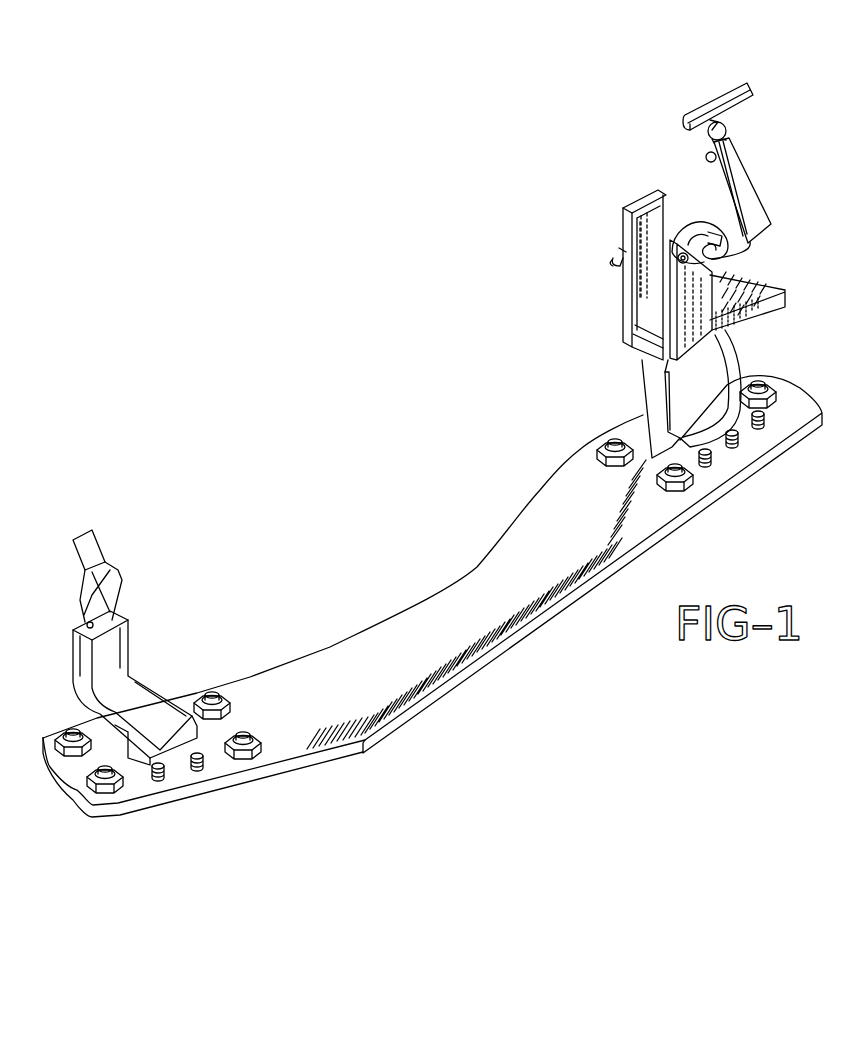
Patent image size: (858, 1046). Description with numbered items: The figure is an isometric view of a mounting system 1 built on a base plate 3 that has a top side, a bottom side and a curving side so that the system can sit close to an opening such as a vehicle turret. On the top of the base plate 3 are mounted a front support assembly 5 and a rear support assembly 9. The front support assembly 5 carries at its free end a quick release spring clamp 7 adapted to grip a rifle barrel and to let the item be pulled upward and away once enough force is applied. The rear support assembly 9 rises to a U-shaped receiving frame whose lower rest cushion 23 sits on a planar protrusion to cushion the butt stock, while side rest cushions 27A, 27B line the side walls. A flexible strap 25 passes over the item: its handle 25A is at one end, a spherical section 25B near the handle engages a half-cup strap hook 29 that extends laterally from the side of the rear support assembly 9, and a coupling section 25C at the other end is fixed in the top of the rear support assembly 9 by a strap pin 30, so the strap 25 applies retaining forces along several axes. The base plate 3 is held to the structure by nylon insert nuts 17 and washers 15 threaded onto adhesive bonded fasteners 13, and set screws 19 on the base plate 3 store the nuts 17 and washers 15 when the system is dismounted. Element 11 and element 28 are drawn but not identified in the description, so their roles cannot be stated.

The mounting system 1 is at (338, 460).
The base plate 3 is at (495, 555).
The front support assembly 5 is at (152, 686).
The spring clamp 7 is at (102, 552).
The rear support assembly 9 is at (683, 324).
The curved strap 11 is at (748, 320).
The adhesive bonded fasteners 13 is at (230, 697).
The washers 15 is at (670, 465).
The nylon insert nuts 17 is at (415, 587).
The set screws 19 is at (205, 772).
The lower rest cushion 23 is at (762, 285).
The strap 25 is at (731, 151).
The handle 25A is at (740, 86).
The spherical section 25B is at (706, 158).
The coupling section 25C is at (717, 237).
The side rest cushion 27A is at (647, 233).
The side rest cushion 27B is at (623, 250).
The pivot bolt 28 is at (716, 232).
The strap hook 29 is at (620, 263).
The strap pin 30 is at (683, 263).